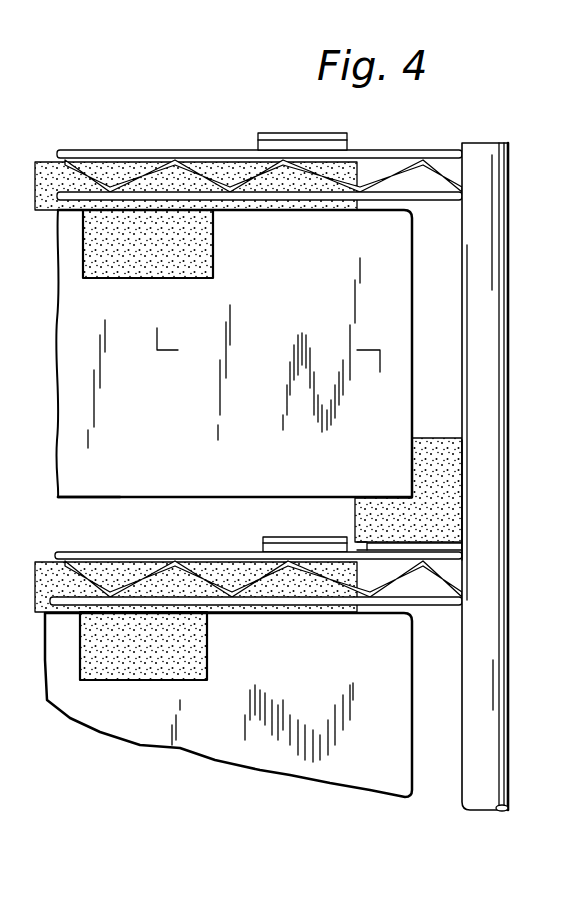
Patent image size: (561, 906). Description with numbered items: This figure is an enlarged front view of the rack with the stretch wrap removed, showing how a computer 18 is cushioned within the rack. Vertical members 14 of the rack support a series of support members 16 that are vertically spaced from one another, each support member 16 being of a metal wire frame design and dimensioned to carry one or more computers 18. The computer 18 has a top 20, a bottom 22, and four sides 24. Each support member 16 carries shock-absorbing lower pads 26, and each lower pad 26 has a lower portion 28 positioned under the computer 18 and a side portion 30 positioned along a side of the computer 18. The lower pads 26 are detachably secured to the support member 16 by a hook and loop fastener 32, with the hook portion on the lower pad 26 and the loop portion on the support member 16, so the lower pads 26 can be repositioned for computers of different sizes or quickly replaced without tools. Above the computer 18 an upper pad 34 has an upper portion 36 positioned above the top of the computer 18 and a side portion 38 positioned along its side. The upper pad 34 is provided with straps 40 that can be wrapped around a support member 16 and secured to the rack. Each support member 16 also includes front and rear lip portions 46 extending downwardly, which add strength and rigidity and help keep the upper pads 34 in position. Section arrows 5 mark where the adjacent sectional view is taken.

The section line for FIG. 5 is at (160, 70).
The vertical members 14 is at (483, 300).
The support member 16 is at (171, 556).
The computer 18 is at (380, 268).
The top 20 is at (414, 205).
The bottom 22 is at (172, 446).
The sides 24 is at (75, 503).
The lower pad 26 is at (467, 484).
The lower portion 28 is at (385, 518).
The side portion 30 is at (440, 452).
The hook and loop fastener 32 is at (445, 548).
The upper pad 34 is at (43, 160).
The upper portion 36 is at (236, 165).
The side portion 38 is at (185, 250).
The strap 40 is at (306, 141).
The lip portions 46 is at (140, 162).